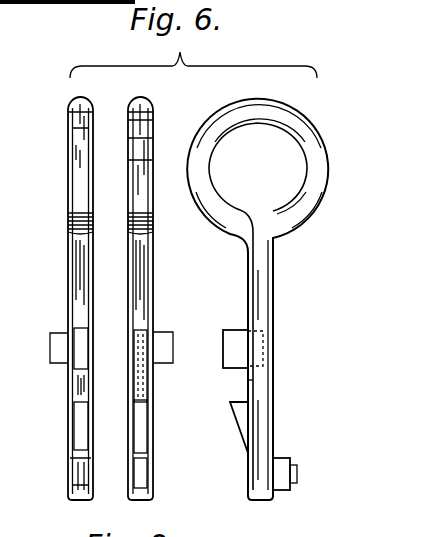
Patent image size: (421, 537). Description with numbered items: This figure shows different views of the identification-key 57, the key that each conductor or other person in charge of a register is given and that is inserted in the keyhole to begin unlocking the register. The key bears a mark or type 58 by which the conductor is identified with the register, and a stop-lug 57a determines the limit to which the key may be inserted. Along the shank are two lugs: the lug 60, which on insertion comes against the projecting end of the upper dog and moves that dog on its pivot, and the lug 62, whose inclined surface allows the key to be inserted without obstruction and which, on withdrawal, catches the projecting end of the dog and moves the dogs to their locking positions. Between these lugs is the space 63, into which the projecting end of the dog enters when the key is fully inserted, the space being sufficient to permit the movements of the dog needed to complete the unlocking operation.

The identification-key 57 is at (68, 261).
The stop-lug 57a is at (181, 326).
The mark or type 58 is at (148, 471).
The locking lug 60 is at (80, 353).
The unlocking lug 62 is at (80, 424).
The space between the lugs 63 is at (240, 383).